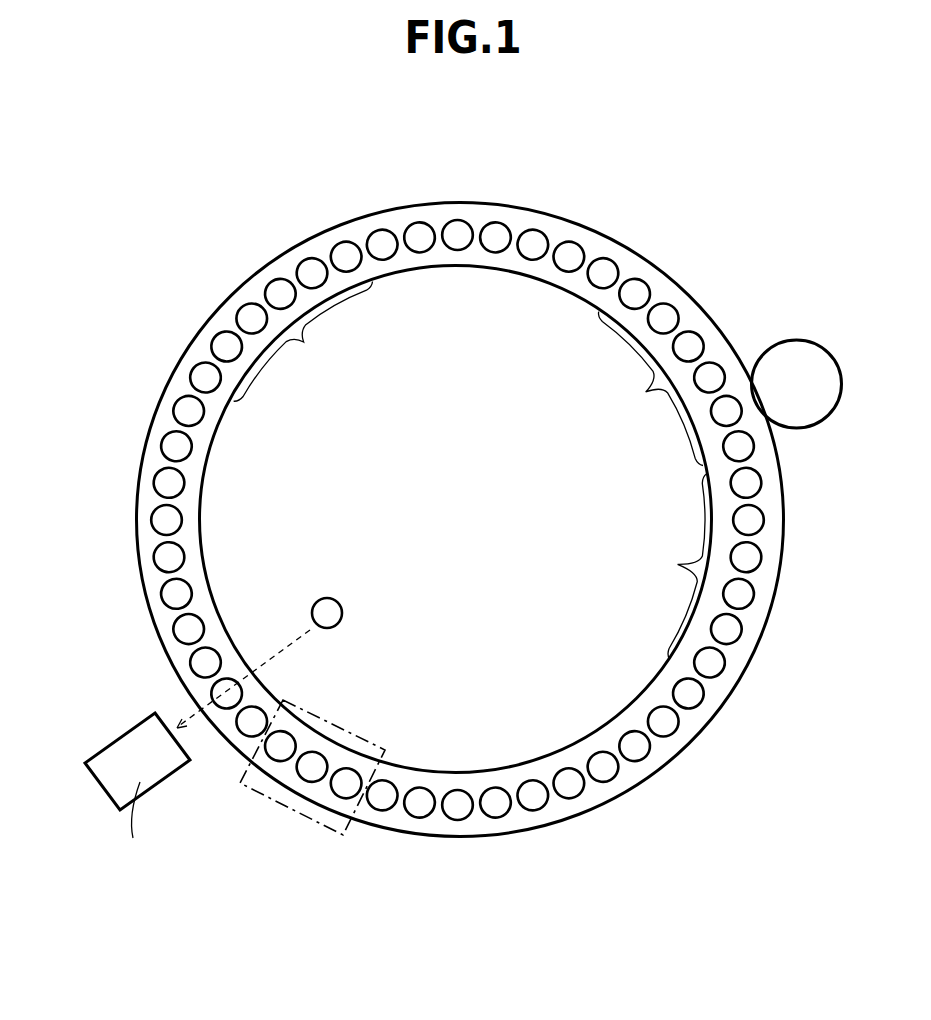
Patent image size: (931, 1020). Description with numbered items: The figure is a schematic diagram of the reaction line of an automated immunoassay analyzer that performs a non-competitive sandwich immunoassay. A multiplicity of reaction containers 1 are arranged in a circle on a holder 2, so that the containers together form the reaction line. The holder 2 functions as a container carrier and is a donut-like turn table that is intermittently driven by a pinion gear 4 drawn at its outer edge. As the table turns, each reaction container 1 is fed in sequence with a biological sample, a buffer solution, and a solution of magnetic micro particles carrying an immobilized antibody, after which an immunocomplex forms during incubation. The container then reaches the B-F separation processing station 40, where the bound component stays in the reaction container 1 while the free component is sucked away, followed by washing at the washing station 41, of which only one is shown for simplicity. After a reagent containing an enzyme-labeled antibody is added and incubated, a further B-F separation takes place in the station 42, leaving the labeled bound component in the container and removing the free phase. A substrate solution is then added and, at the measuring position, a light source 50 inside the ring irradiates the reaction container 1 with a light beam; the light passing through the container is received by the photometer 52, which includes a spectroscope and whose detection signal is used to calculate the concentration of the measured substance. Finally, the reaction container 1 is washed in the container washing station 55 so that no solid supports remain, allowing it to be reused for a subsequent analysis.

The reaction container 1 is at (674, 723).
The holder 2 is at (608, 240).
The pinion gear 4 is at (797, 340).
The B-F separation processing station 40 is at (673, 566).
The washing station 41 is at (650, 389).
The B-F separation station 42 is at (303, 342).
The light source 50 is at (328, 598).
The photometer 52 is at (132, 730).
The container washing station 55 is at (302, 820).